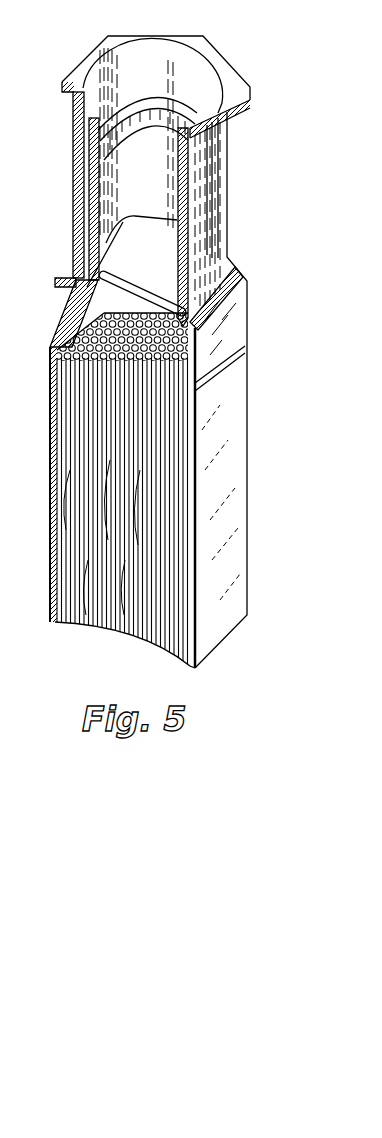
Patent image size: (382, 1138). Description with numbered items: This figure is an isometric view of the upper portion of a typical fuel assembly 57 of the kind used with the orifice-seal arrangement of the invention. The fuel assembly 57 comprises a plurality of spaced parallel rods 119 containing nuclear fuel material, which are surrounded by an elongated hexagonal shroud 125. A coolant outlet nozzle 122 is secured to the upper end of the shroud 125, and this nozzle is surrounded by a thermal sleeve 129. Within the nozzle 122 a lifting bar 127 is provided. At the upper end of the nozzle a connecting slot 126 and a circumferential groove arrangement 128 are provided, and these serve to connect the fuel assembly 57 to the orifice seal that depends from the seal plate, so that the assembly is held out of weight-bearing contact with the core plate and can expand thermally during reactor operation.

The fuel assembly 57 is at (187, 484).
The rods 119 is at (173, 610).
The coolant outlet nozzle 122 is at (77, 229).
The hexagonal shroud 125 is at (244, 611).
The connecting slot 126 is at (122, 106).
The lifting bar 127 is at (66, 313).
The circumferential groove arrangement 128 is at (186, 142).
The thermal sleeve 129 is at (227, 222).